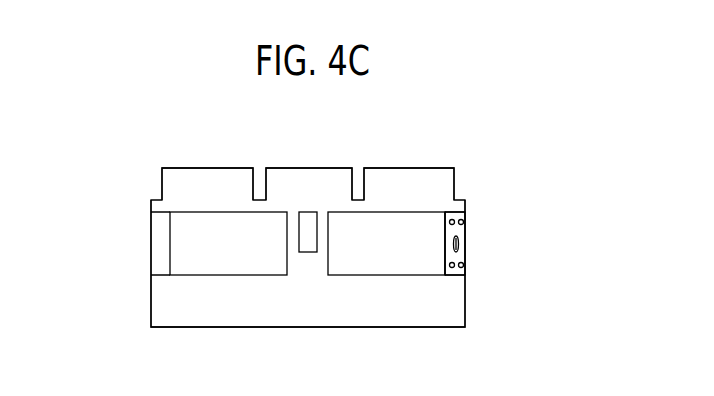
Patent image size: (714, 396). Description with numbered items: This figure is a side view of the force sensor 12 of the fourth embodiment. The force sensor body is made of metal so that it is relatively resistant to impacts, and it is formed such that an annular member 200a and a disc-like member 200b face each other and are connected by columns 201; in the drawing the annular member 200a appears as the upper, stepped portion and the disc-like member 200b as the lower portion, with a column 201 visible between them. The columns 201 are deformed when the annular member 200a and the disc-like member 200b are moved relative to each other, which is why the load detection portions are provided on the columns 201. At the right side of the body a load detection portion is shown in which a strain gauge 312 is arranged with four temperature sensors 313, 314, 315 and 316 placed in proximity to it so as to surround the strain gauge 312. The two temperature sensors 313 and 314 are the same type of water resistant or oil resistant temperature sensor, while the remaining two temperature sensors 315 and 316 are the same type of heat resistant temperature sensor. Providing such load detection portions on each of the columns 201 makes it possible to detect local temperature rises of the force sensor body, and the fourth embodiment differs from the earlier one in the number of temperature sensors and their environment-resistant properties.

The force sensor 12 is at (111, 155).
The annular member 200a is at (205, 185).
The disc-like member 200b is at (172, 303).
The column 201 is at (307, 262).
The strain gauge 312 is at (462, 243).
The temperature sensor 313 is at (445, 264).
The temperature sensor 314 is at (465, 264).
The temperature sensor 315 is at (458, 222).
The temperature sensor 316 is at (463, 225).